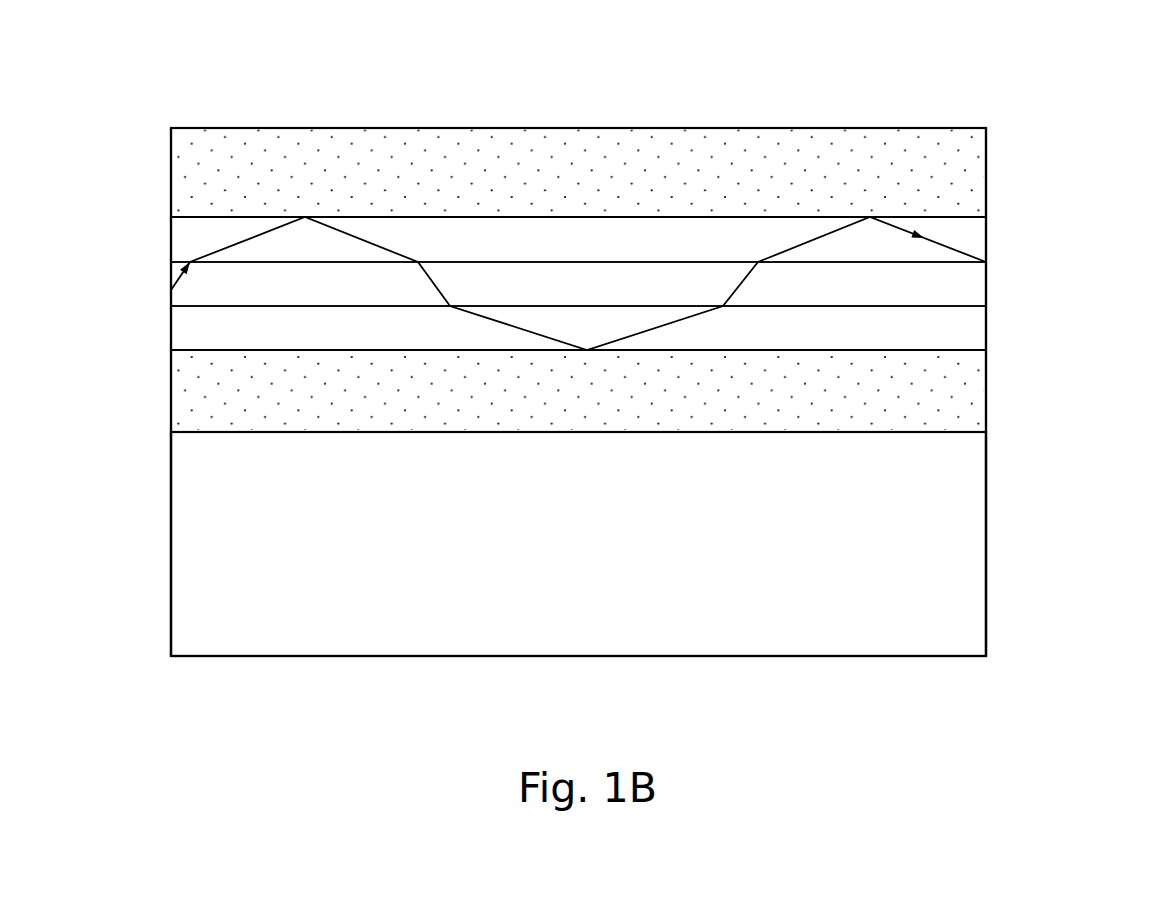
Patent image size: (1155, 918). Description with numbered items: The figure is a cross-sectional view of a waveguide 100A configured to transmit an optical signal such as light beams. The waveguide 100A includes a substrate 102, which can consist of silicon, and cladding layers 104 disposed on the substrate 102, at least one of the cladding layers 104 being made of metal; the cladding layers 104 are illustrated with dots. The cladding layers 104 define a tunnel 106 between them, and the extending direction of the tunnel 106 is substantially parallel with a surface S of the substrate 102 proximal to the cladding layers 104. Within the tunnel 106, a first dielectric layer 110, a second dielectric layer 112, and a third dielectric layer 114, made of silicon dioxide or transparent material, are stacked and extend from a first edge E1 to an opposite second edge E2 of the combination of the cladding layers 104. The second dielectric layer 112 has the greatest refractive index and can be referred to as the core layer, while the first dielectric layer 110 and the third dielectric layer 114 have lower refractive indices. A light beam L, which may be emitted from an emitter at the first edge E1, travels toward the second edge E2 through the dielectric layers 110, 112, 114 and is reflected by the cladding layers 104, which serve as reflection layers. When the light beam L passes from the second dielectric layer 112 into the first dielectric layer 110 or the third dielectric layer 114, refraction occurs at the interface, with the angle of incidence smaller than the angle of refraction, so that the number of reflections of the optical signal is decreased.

The waveguide 100A is at (127, 63).
The substrate 102 is at (977, 499).
The cladding layers 104 is at (978, 170).
The tunnel 106 is at (672, 215).
The first dielectric layer 110 is at (978, 329).
The second dielectric layer 112 is at (978, 284).
The third dielectric layer 114 is at (978, 240).
The light beam L is at (243, 240).
The surface S is at (930, 430).
The first edge E1 is at (157, 417).
The second edge E2 is at (1000, 417).